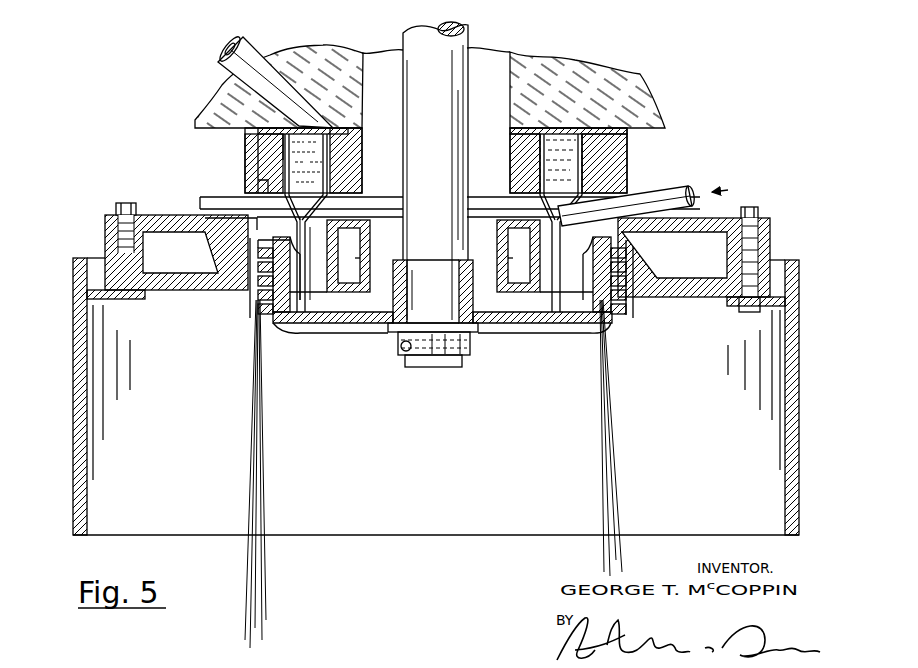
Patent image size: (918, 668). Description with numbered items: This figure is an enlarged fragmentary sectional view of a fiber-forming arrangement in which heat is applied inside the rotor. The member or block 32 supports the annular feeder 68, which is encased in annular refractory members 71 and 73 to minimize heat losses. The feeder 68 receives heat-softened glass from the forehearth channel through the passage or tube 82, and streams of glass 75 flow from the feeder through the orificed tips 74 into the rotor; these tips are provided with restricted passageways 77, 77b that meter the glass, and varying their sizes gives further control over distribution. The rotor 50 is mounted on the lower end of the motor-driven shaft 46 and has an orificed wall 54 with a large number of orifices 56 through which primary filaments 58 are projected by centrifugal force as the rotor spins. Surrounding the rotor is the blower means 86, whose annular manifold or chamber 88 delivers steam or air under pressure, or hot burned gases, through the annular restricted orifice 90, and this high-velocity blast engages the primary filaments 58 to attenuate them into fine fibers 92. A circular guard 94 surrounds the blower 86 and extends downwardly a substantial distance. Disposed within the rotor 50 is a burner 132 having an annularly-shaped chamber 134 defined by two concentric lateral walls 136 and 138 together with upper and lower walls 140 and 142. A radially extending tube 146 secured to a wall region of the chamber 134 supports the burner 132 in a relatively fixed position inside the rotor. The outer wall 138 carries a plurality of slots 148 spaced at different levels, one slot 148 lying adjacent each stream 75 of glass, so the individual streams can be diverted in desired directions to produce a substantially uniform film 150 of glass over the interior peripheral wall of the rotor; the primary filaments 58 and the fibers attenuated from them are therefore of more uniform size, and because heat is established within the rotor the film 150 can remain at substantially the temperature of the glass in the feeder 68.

The member or block 32 is at (627, 88).
The motor-driven shaft 46 is at (470, 42).
The rotor 50 is at (590, 330).
The orificed wall 54 is at (622, 296).
The orifices 56 is at (256, 312).
The primary filaments 58 is at (262, 280).
The annular feeder 68 is at (583, 150).
The annular refractory member 71 is at (360, 144).
The annular refractory member 73 is at (252, 160).
The orificed tips 74 is at (297, 207).
The streams of glass 75 is at (546, 366).
The restricted passageways 77 is at (305, 205).
The restricted passageways 77b is at (565, 205).
The passage or tube 82 is at (239, 40).
The blower means 86 is at (772, 222).
The annular manifold or chamber 88 is at (182, 257).
The annular restricted orifice 90 is at (250, 218).
The fibers 92 is at (252, 403).
The circular member or guard 94 is at (76, 264).
The burner 132 is at (528, 294).
The annularly-shaped chamber 134 is at (336, 292).
The lateral wall 136 is at (402, 214).
The outer wall 138 is at (310, 300).
The upper wall 140 is at (361, 218).
The lower wall 142 is at (350, 292).
The radially extending tube 146 is at (664, 194).
The slots 148 is at (300, 322).
The film of glass 150 is at (293, 320).